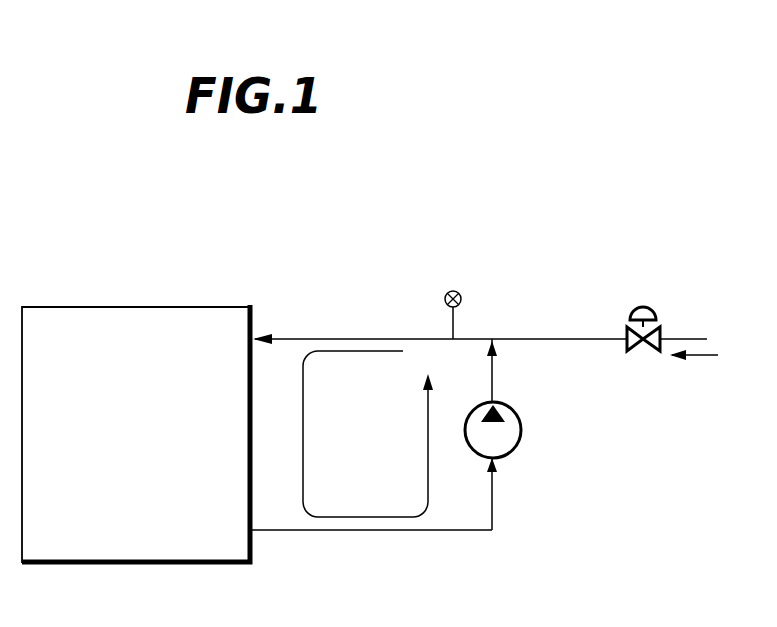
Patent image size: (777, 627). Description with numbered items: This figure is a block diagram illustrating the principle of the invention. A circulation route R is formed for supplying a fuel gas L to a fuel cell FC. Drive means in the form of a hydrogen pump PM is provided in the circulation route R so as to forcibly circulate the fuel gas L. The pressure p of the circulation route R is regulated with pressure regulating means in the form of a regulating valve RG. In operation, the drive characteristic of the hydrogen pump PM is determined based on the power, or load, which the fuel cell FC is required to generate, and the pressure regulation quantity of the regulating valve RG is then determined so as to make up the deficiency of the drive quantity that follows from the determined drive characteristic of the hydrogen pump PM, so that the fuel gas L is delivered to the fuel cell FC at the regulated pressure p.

The fuel cell FC is at (212, 306).
The drive means (hydrogen pump) PM is at (521, 430).
The circulation route R is at (365, 517).
The pressure p is at (461, 296).
The pressure regulating means (regulating valve) RG is at (643, 306).
The fuel gas L is at (706, 356).